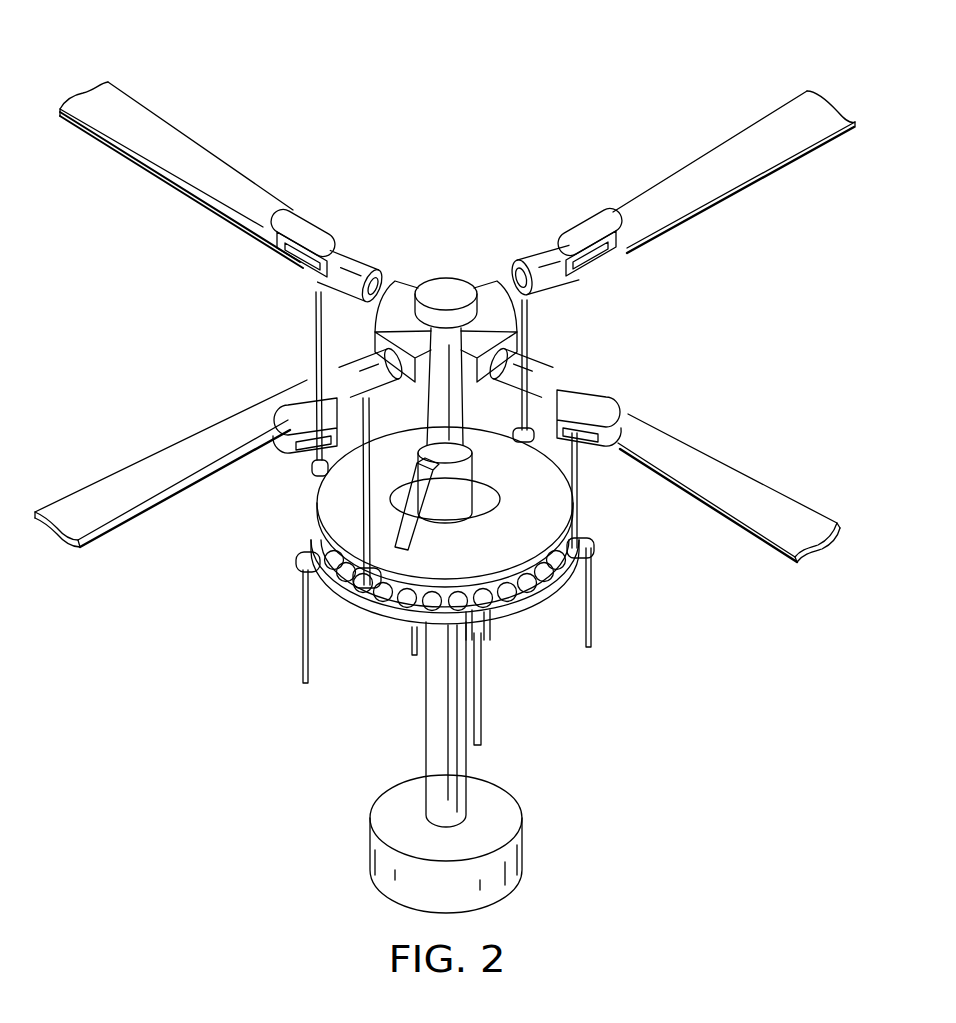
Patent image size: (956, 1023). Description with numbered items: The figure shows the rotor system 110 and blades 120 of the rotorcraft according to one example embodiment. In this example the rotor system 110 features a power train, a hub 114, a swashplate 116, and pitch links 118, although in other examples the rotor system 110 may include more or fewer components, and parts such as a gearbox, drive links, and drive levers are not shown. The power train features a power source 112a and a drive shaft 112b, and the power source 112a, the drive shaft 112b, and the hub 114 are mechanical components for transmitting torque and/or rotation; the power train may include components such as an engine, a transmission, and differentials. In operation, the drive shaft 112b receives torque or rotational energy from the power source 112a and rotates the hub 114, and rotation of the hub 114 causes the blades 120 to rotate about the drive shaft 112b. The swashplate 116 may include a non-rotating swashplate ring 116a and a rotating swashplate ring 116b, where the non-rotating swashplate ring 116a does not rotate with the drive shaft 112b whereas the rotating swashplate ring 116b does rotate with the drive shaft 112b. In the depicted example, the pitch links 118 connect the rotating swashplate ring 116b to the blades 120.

The rotor system 110 is at (501, 75).
The power source 112a is at (522, 848).
The drive shaft 112b is at (426, 727).
The hub 114 is at (400, 290).
The swashplate 116 is at (608, 492).
The non-rotating swashplate ring 116a is at (513, 622).
The rotating swashplate ring 116b is at (330, 491).
The pitch links 118 is at (313, 340).
The blades 120 is at (199, 153).